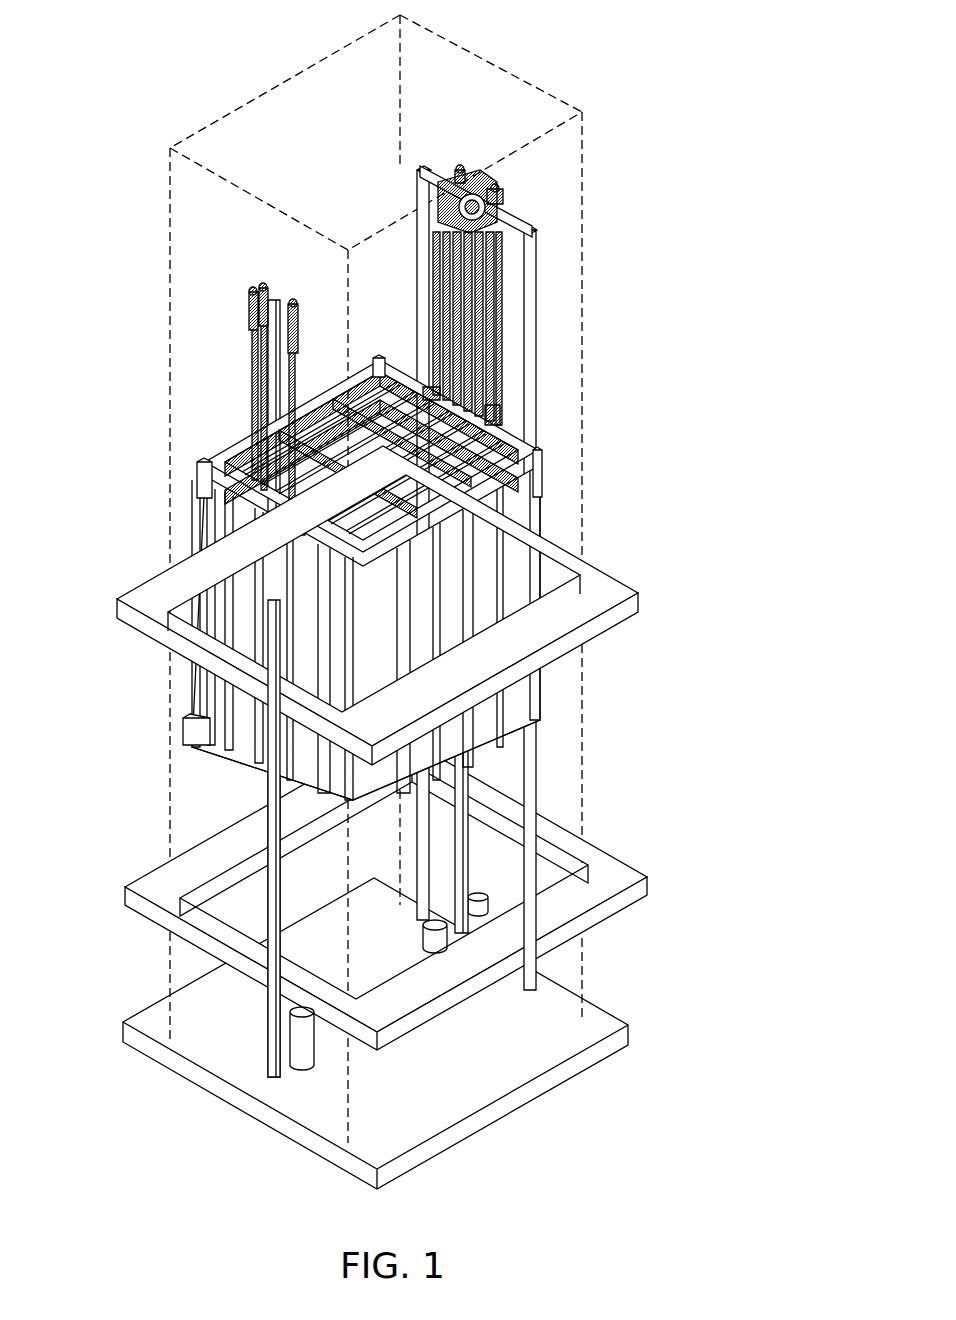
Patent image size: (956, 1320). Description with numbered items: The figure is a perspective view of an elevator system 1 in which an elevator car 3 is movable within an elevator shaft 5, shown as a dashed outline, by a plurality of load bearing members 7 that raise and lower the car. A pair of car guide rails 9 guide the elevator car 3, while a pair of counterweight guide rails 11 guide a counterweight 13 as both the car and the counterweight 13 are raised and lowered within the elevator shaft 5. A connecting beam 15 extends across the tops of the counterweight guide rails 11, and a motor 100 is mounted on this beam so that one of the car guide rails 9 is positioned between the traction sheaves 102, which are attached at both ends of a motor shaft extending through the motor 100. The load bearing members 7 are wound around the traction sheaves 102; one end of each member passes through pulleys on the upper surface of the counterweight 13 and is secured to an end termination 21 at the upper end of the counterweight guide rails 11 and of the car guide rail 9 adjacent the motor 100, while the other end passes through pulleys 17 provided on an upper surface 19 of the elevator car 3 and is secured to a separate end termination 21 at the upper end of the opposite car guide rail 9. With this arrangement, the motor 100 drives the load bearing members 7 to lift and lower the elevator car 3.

The elevator system 1 is at (137, 327).
The elevator car 3 is at (518, 547).
The elevator shaft 5 is at (580, 195).
The load bearing members 7 is at (447, 305).
The car guide rails 9 is at (266, 827).
The counterweight guide rails 11 is at (418, 260).
The counterweight 13 is at (497, 778).
The connecting beam 15 is at (515, 232).
The pulleys 17 is at (430, 385).
The upper surface 19 is at (512, 473).
The end termination 21 is at (248, 307).
The motor 100 is at (475, 185).
The traction sheaves 102 is at (438, 190).